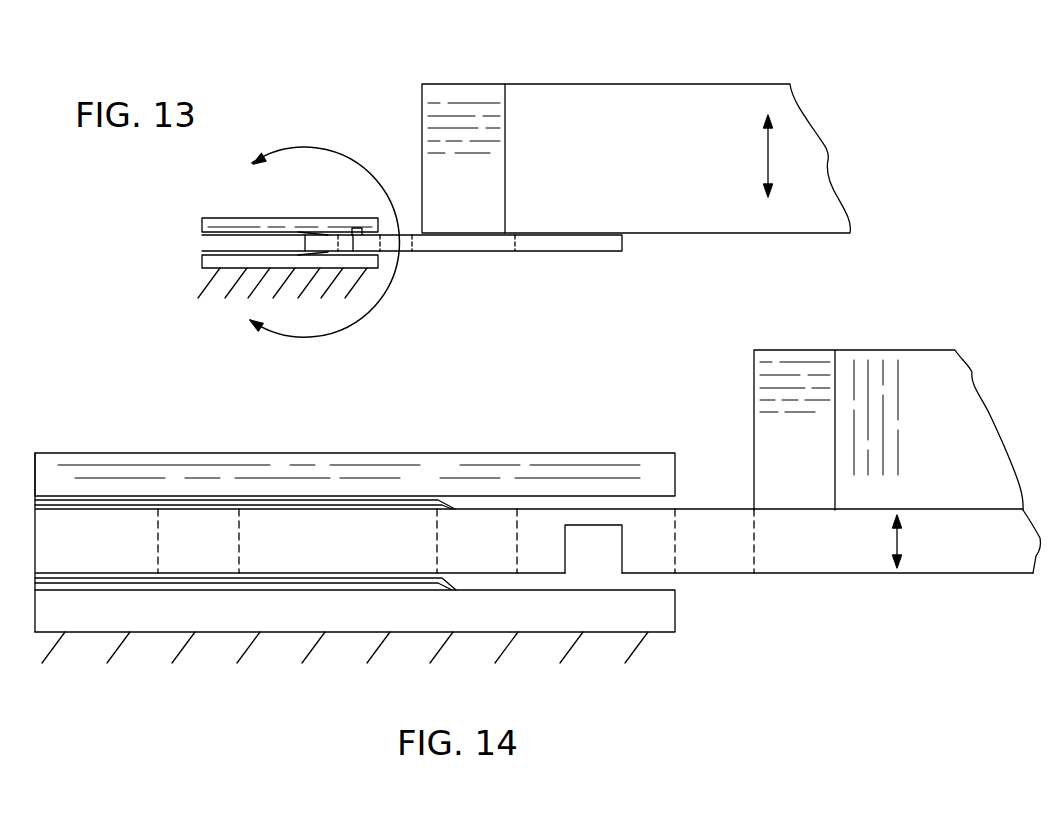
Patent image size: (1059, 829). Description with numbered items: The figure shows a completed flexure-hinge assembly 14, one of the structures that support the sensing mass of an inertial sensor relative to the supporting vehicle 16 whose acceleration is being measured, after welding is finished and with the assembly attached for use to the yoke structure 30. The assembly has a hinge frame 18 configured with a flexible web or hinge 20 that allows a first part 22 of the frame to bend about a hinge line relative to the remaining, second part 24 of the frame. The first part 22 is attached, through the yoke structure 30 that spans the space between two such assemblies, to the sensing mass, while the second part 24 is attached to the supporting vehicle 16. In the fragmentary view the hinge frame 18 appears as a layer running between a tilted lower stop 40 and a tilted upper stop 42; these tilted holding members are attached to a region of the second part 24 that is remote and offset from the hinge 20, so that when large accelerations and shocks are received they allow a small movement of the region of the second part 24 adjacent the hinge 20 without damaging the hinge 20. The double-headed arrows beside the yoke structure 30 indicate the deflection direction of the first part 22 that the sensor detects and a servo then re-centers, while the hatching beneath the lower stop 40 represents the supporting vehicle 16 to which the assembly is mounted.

In FIG. 13, the flexure-hinge assembly 14 is at (218, 199).
In FIG. 14, the flexure-hinge assembly 14 is at (473, 437).
In FIG. 14, the supporting vehicle 16 is at (284, 673).
In FIG. 13, the hinge frame 18 is at (548, 253).
In FIG. 14, the hinge frame 18 is at (704, 508).
In FIG. 13, the hinge 20 is at (356, 233).
In FIG. 14, the hinge 20 is at (575, 515).
In FIG. 14, the first part 22 is at (826, 554).
In FIG. 14, the second part 24 is at (369, 558).
In FIG. 13, the yoke structure 30 is at (656, 98).
In FIG. 14, the yoke structure 30 is at (798, 368).
In FIG. 14, the tilted lower stop 40 is at (369, 621).
In FIG. 14, the tilted upper stop 42 is at (444, 485).